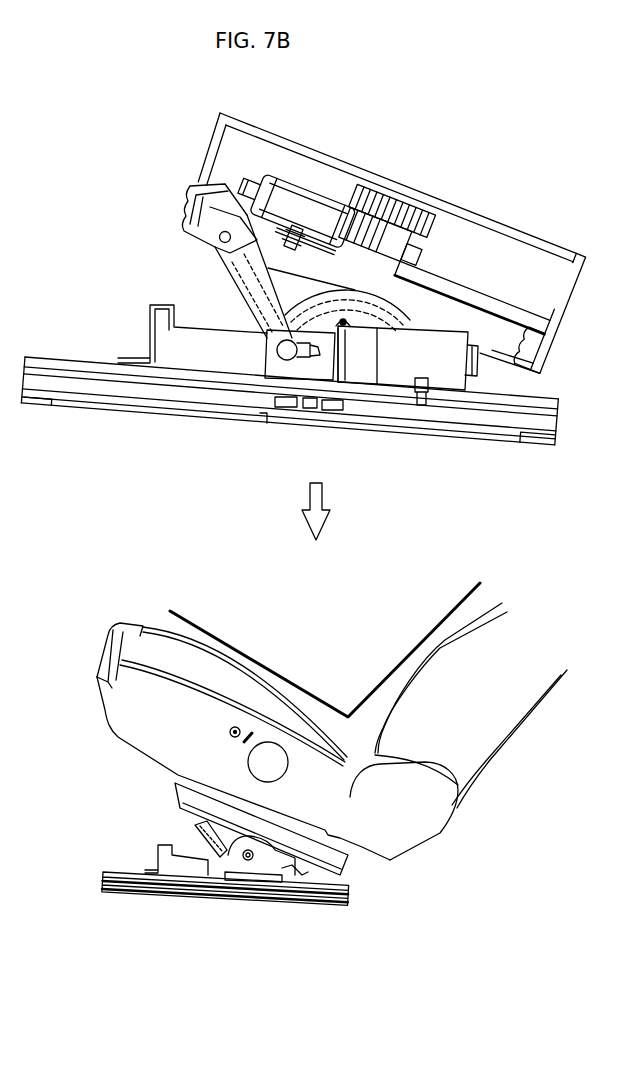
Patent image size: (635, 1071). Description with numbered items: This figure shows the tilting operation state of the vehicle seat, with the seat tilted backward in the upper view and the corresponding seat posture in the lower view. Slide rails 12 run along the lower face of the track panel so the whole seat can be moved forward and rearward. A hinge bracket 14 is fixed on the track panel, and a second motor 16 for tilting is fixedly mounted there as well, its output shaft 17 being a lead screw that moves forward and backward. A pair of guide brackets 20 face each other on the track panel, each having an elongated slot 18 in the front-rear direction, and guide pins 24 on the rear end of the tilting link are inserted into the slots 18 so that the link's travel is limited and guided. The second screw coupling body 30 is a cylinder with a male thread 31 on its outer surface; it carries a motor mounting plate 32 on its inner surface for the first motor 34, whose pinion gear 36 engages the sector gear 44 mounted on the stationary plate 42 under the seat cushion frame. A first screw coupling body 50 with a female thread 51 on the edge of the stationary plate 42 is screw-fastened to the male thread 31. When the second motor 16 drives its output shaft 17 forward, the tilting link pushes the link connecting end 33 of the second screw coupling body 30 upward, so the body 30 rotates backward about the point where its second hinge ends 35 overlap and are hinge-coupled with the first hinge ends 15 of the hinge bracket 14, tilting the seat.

The slide rail 12 is at (453, 415).
The hinge bracket 14 is at (173, 360).
The first hinge end 15 is at (362, 320).
The second motor 16 is at (403, 365).
The output shaft 17 is at (318, 355).
The slot 18 is at (302, 356).
The guide bracket 20 is at (260, 367).
The guide pin 24 is at (287, 360).
The second screw coupling body 30 is at (228, 264).
The male thread 31 is at (550, 349).
The motor mounting plate 32 is at (316, 230).
The link connecting end 33 is at (205, 232).
The first motor 34 is at (296, 182).
The second hinge end 35 is at (268, 331).
The pinion gear 36 is at (390, 202).
The stationary plate 42 is at (493, 222).
The sector gear 44 is at (425, 213).
The first screw coupling body 50 is at (584, 250).
The female thread 51 is at (553, 337).